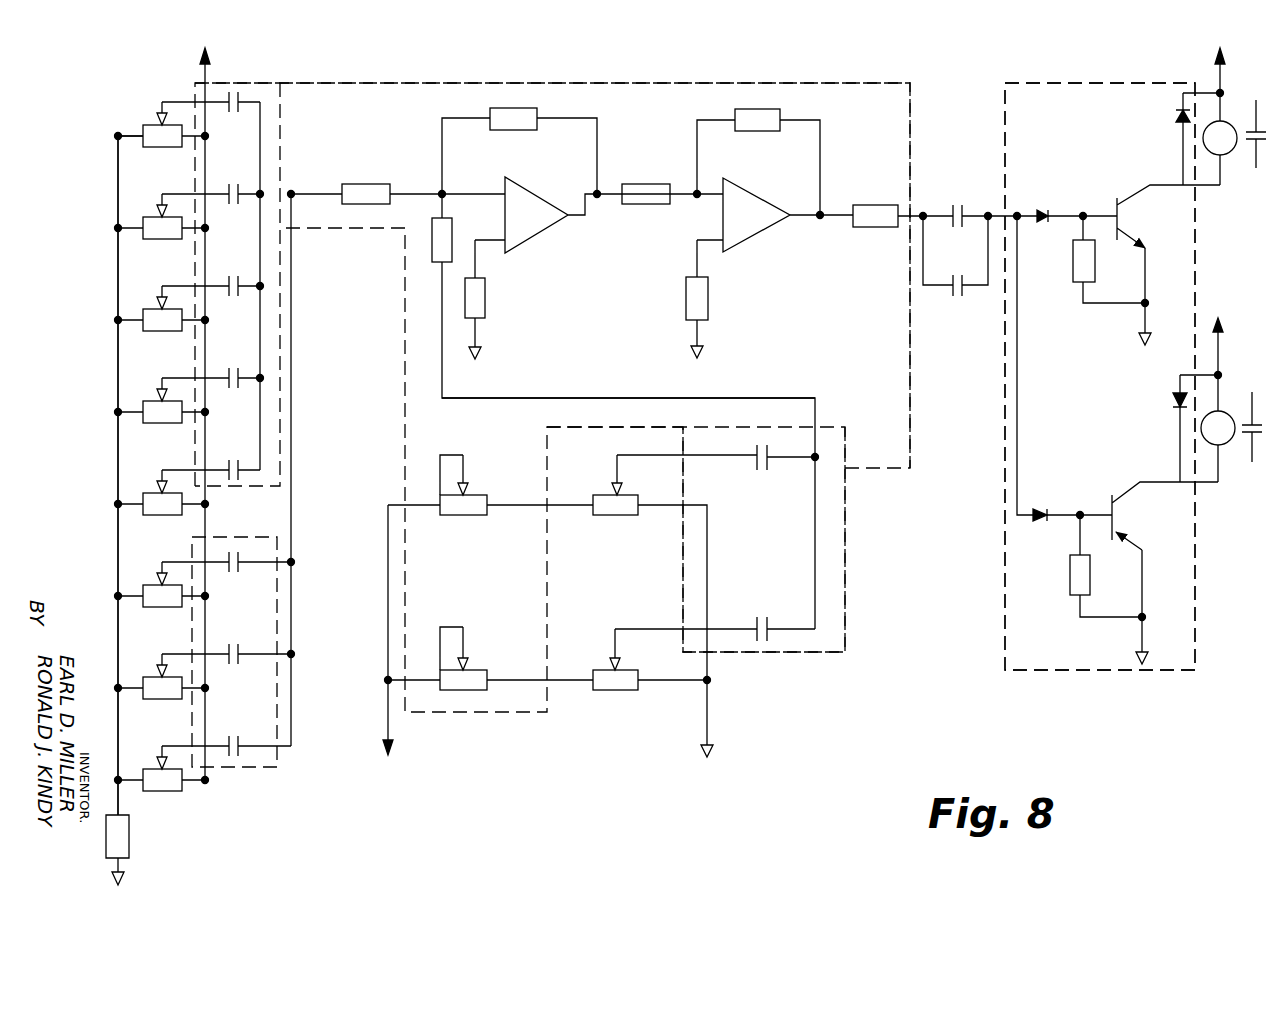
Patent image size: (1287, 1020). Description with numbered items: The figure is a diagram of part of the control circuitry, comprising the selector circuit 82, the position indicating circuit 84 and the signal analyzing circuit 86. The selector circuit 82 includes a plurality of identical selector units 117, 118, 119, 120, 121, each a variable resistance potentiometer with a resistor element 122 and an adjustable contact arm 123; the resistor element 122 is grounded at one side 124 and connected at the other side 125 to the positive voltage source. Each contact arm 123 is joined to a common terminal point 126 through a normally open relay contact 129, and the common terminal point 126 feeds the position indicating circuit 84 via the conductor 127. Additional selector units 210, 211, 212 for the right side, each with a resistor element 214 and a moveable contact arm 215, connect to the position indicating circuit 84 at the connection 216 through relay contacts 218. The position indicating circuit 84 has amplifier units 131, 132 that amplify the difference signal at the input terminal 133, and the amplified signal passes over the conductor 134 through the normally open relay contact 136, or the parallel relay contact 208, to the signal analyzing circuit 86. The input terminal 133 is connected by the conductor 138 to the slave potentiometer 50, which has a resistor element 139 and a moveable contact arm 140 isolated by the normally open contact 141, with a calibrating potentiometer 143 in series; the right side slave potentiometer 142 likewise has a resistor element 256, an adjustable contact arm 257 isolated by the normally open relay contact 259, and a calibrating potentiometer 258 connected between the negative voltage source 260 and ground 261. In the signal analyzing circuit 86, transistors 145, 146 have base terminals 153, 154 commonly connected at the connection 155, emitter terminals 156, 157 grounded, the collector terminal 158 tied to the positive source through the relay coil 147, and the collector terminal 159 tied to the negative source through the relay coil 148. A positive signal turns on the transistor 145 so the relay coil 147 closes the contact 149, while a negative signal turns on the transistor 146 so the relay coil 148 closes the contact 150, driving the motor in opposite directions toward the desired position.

The selector circuit 82 is at (44, 300).
The position indicating circuit 84 is at (878, 138).
The signal analyzing circuit 86 is at (1202, 604).
The variable voltage potentiometer 50 is at (578, 458).
The selector unit 117 is at (118, 112).
The selector unit 118 is at (135, 204).
The selector unit 119 is at (130, 300).
The selector unit 120 is at (132, 398).
The selector unit 121 is at (135, 490).
The resistor element 122 is at (143, 141).
The adjustable contact arm 123 is at (172, 102).
The ground connection 124 is at (118, 136).
The positive voltage connection 125 is at (207, 138).
The common terminal point 126 is at (262, 192).
The conductor 127 is at (328, 192).
The normally open relay contact 129 is at (262, 102).
The amplifier unit 131 is at (522, 192).
The amplifier unit 132 is at (752, 192).
The input terminal 133 is at (440, 190).
The conductor 134 is at (910, 216).
The normally open relay contact 136 is at (955, 224).
The conductor 138 is at (622, 398).
The resistor element 139 is at (625, 516).
The moveable contact arm 140 is at (610, 463).
The normally open contact 141 is at (768, 462).
The slave potentiometer 142 is at (607, 636).
The calibrating potentiometer 143 is at (470, 516).
The transistor 145 is at (1102, 156).
The transistor 146 is at (1108, 478).
The relay coil 147 is at (1203, 138).
The relay coil 148 is at (1201, 434).
The normally open contact 149 is at (1262, 150).
The normally open contact 150 is at (1262, 418).
The base terminal 153 is at (1110, 186).
The base terminal 154 is at (1082, 512).
The common connection 155 is at (1012, 210).
The emitter terminal 156 is at (1147, 303).
The emitter terminal 157 is at (1144, 616).
The collector terminal 158 is at (1162, 158).
The collector terminal 159 is at (1136, 478).
The relay contact 208 is at (956, 292).
The selector unit 210 is at (140, 583).
The selector unit 211 is at (142, 673).
The selector unit 212 is at (142, 755).
The resistor element 214 is at (143, 600).
The moveable contact arm 215 is at (176, 562).
The connection point 216 is at (292, 196).
The relay contact 218 is at (243, 574).
The resistor element 256 is at (608, 692).
The adjustable contact arm 257 is at (640, 628).
The calibrating potentiometer 258 is at (460, 692).
The normally-open relay contact 259 is at (790, 598).
The negative voltage source connection 260 is at (386, 682).
The ground connection 261 is at (710, 681).